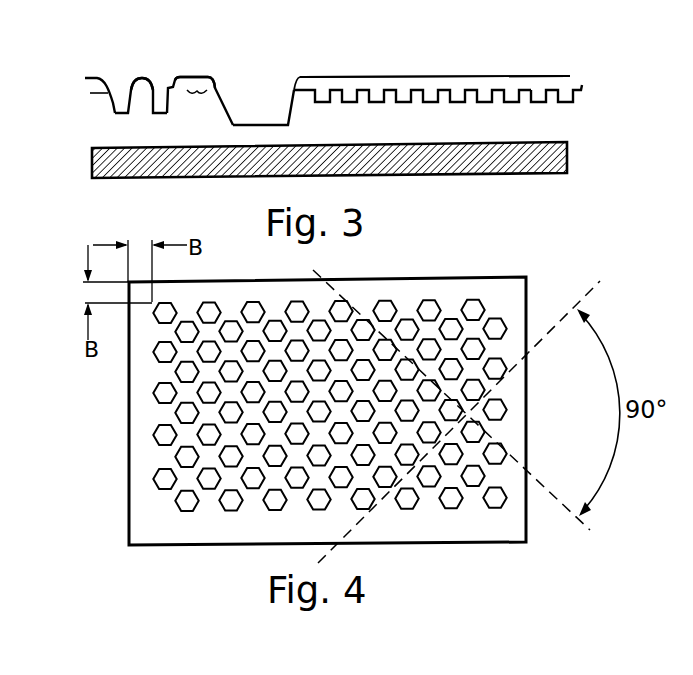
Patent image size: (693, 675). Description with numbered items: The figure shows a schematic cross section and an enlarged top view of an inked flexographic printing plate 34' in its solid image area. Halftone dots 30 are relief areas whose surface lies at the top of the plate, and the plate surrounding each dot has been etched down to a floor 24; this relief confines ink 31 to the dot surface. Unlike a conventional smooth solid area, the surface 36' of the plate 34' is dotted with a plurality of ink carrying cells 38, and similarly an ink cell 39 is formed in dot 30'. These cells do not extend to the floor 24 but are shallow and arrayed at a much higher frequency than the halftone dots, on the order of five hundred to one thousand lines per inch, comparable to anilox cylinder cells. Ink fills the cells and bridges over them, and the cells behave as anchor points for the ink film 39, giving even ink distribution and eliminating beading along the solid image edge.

In FIG. 3, the floor 24 is at (247, 123).
In FIG. 3, the halftone dot 30 is at (112, 71).
In FIG. 3, the dot 30' is at (200, 71).
In FIG. 3, the ink 31 is at (131, 85).
In FIG. 3, the plate 34' is at (435, 38).
In FIG. 3, the surface 36' is at (412, 62).
In FIG. 4, the surface 36' is at (368, 375).
In FIG. 3, the ink carrying cells 38 is at (526, 98).
In FIG. 4, the ink carrying cells 38 is at (432, 301).
In FIG. 3, the ink cell 39 is at (193, 96).